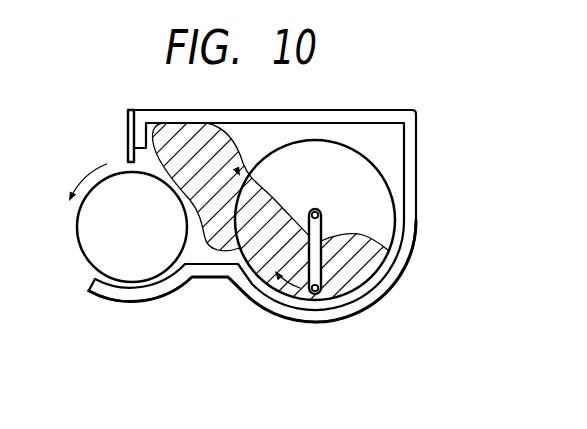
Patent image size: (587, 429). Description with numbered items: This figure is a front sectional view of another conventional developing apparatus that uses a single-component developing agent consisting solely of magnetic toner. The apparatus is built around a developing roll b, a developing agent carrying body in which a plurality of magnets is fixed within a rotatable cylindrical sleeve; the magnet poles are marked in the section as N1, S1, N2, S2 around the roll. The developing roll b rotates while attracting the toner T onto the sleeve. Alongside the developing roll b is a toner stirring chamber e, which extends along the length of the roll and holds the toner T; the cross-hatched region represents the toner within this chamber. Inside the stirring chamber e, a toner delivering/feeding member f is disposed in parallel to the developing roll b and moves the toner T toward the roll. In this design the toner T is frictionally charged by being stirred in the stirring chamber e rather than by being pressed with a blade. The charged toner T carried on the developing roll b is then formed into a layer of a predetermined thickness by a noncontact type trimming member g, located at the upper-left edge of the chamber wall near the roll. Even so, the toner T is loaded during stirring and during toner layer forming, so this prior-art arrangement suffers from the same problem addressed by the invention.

The toner stirring chamber e is at (398, 153).
The noncontact type trimming member g is at (128, 126).
The toner T is at (389, 250).
The toner delivering/feeding member f is at (321, 213).
The developing roll b is at (119, 232).
The north magnetic pole 1 N1 is at (138, 189).
The south magnetic pole 1 S1 is at (95, 224).
The north magnetic pole 2 N2 is at (128, 267).
The south magnetic pole 2 S2 is at (170, 235).